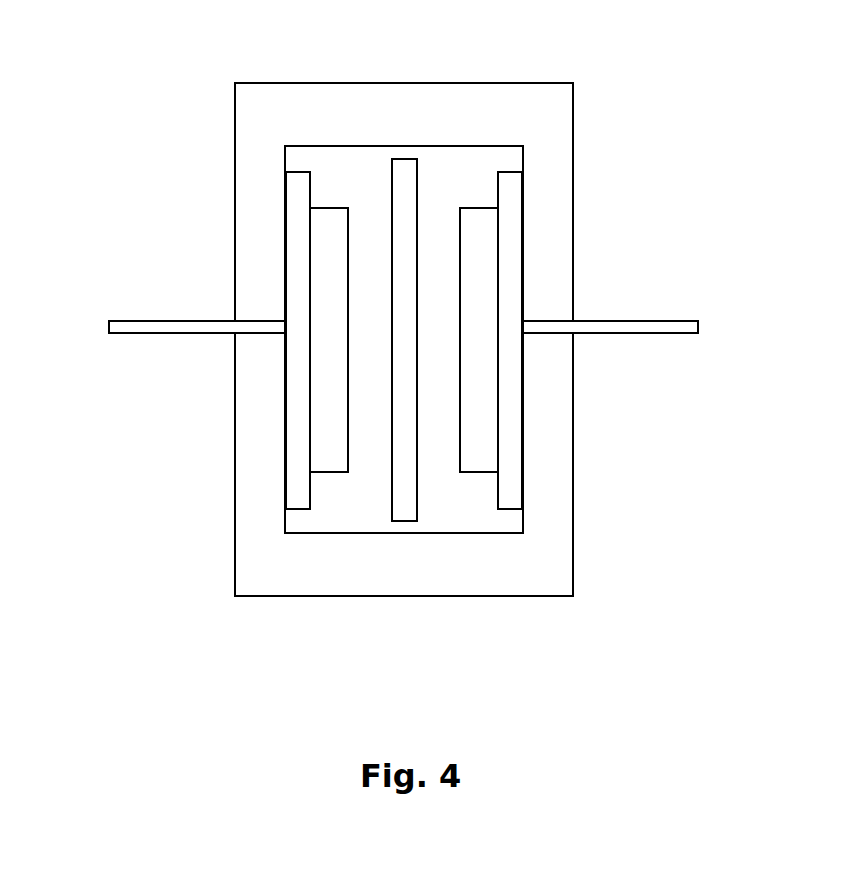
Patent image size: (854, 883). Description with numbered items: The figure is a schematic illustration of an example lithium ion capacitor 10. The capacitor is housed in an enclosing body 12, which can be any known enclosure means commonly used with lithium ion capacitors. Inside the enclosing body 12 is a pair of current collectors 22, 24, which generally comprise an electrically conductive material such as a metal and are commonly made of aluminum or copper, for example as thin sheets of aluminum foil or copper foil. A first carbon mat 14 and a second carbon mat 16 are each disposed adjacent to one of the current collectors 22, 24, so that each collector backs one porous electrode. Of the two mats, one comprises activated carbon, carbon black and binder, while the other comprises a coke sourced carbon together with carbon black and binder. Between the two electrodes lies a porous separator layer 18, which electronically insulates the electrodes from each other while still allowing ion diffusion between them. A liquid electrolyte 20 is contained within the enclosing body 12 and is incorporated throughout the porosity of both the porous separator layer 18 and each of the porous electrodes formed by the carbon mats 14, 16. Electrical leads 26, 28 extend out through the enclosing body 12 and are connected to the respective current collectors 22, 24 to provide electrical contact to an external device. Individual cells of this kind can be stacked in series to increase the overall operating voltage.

The lithium ion capacitor 10 is at (150, 93).
The enclosing body 12 is at (535, 572).
The first carbon mat 14 is at (335, 459).
The second carbon mat 16 is at (482, 459).
The porous separator layer 18 is at (402, 172).
The liquid electrolyte 20 is at (480, 197).
The current collector 22 is at (298, 233).
The current collector 24 is at (507, 238).
The electrical lead 26 is at (147, 327).
The electrical lead 28 is at (667, 330).